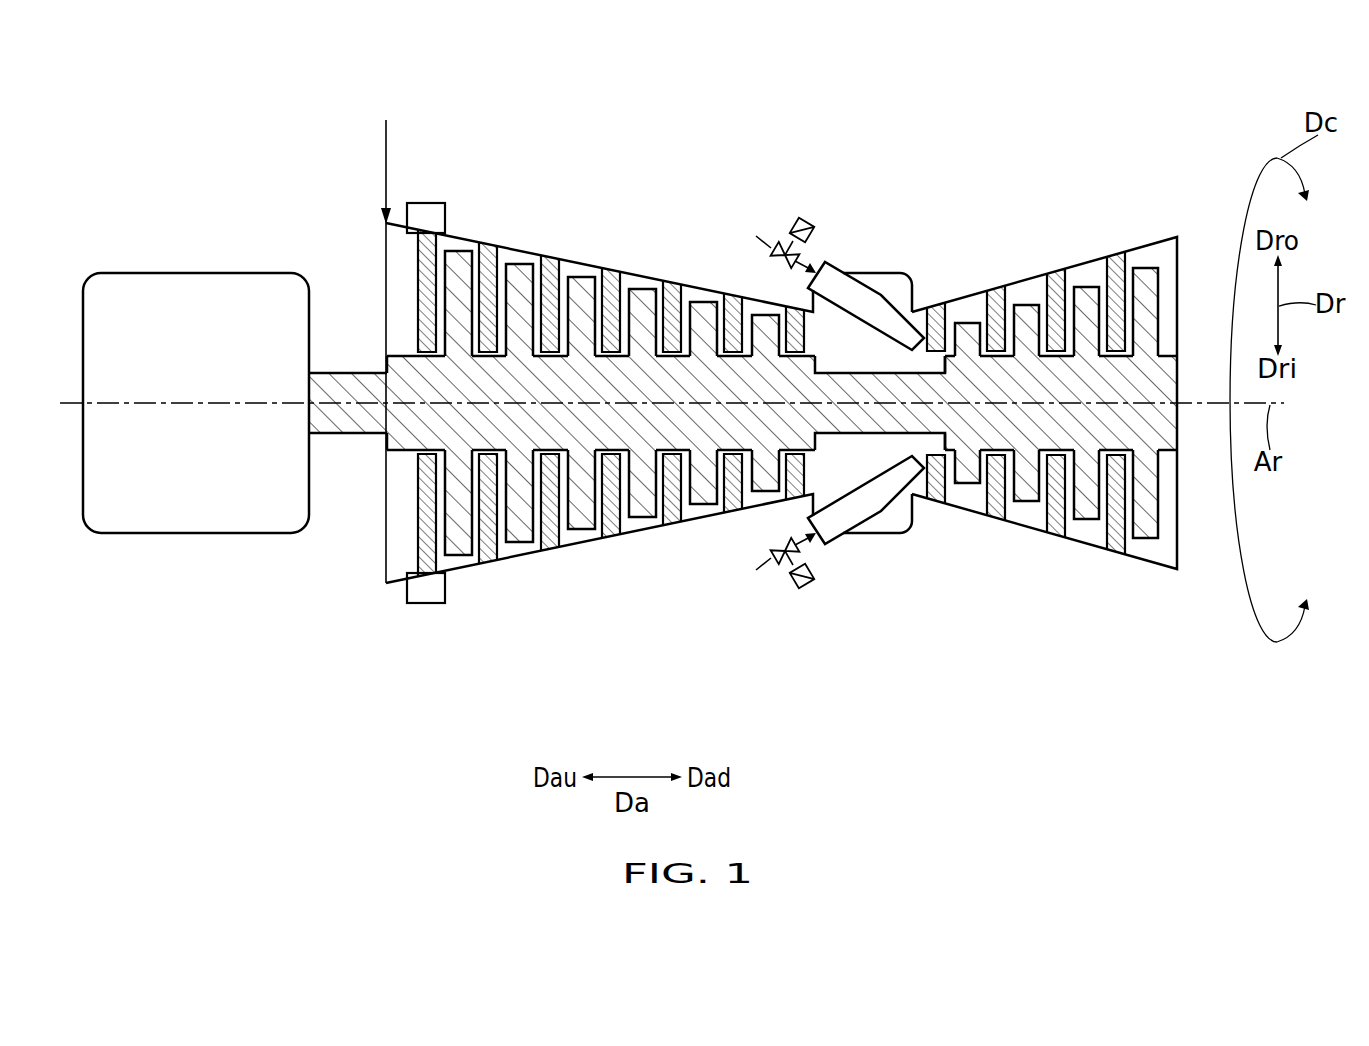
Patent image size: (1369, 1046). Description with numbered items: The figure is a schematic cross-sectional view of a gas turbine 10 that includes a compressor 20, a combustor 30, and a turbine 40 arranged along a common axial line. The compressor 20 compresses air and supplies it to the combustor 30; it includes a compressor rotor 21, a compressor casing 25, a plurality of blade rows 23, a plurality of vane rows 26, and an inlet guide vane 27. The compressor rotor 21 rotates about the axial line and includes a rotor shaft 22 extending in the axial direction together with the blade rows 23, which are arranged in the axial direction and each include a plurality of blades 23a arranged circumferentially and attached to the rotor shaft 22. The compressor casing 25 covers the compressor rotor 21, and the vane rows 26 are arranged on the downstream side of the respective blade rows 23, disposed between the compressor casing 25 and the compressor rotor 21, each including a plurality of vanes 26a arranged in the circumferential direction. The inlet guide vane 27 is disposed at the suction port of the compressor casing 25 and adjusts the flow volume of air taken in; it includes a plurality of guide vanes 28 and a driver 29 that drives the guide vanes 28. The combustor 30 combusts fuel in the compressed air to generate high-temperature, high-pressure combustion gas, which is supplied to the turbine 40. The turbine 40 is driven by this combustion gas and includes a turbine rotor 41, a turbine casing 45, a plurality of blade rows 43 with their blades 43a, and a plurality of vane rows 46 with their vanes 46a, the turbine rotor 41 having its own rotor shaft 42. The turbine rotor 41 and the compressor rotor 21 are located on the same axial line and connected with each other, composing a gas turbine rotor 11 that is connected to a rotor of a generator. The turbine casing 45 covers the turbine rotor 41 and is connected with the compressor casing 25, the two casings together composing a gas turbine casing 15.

The gas turbine 10 is at (672, 370).
The gas turbine rotor 11 is at (868, 436).
The gas turbine casing 15 is at (877, 273).
The compressor 20 is at (639, 250).
The compressor rotor 21 is at (430, 656).
The rotor shaft 22 is at (511, 430).
The blade rows 23 is at (455, 549).
The blades 23a is at (580, 521).
The compressor casing 25 is at (584, 262).
The vane rows 26 is at (491, 245).
The vanes 26a is at (552, 260).
The inlet guide vane 27 is at (490, 80).
The guide vanes 28 is at (448, 245).
The driver 29 is at (425, 203).
The combustor 30 is at (843, 265).
The turbine 40 is at (1136, 247).
The turbine rotor 41 is at (1205, 656).
The turbine rotor shaft 42 is at (1040, 430).
The blade rows 43 is at (968, 476).
The turbine blade 43a is at (1087, 510).
The turbine casing 45 is at (1081, 265).
The vane rows 46 is at (937, 307).
The turbine vane 46a is at (996, 291).